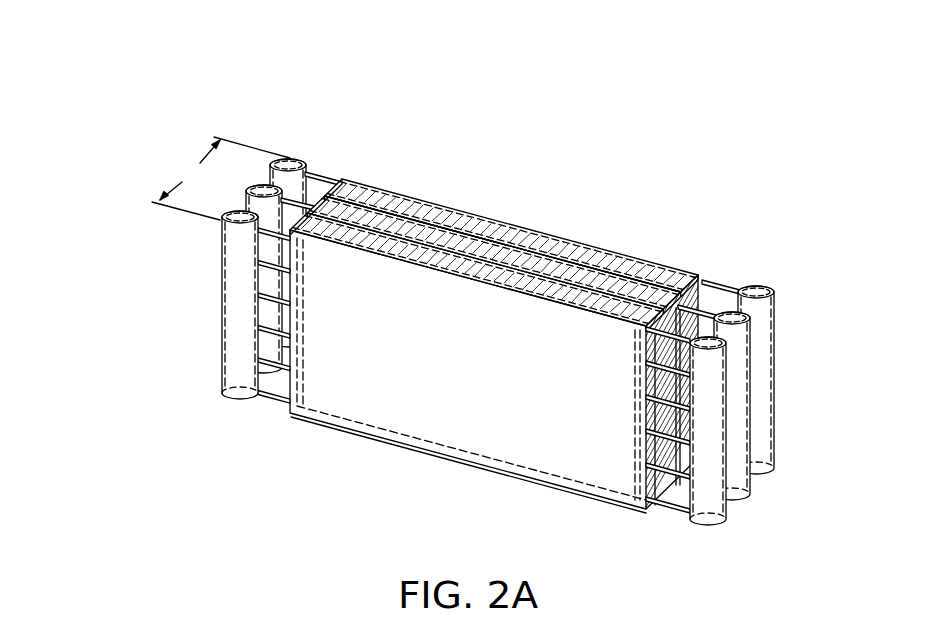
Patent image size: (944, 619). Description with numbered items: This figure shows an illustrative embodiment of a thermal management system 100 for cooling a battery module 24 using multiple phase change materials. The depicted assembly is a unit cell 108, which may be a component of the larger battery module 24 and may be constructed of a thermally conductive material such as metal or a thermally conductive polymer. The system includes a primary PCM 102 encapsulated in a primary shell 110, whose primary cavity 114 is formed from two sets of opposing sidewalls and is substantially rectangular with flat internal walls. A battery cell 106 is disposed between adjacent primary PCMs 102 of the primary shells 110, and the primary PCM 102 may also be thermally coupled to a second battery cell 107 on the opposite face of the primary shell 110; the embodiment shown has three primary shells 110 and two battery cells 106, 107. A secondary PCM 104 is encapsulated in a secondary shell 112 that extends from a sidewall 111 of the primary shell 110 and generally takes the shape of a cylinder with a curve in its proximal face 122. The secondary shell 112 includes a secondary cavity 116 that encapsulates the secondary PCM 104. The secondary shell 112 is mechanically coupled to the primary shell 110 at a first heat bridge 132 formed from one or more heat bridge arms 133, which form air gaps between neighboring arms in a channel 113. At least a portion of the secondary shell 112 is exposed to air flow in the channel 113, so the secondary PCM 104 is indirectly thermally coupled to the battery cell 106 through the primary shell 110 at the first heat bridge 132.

The battery module 24 is at (122, 97).
The thermal management system 100 is at (777, 140).
The primary PCM 102 is at (428, 202).
The secondary PCM 104 is at (288, 162).
The battery cell 106 is at (503, 240).
The second battery cell 107 is at (436, 262).
The unit cell 108 is at (647, 247).
The primary shell 110 is at (333, 414).
The sidewall 111 is at (676, 455).
The secondary shell 112 is at (223, 243).
The channel 113 is at (245, 432).
The primary cavity 114 is at (589, 243).
The secondary cavity 116 is at (762, 284).
The proximal face 122 is at (267, 242).
The first heat bridge 132 is at (336, 164).
The heat bridge arms 133 is at (717, 284).